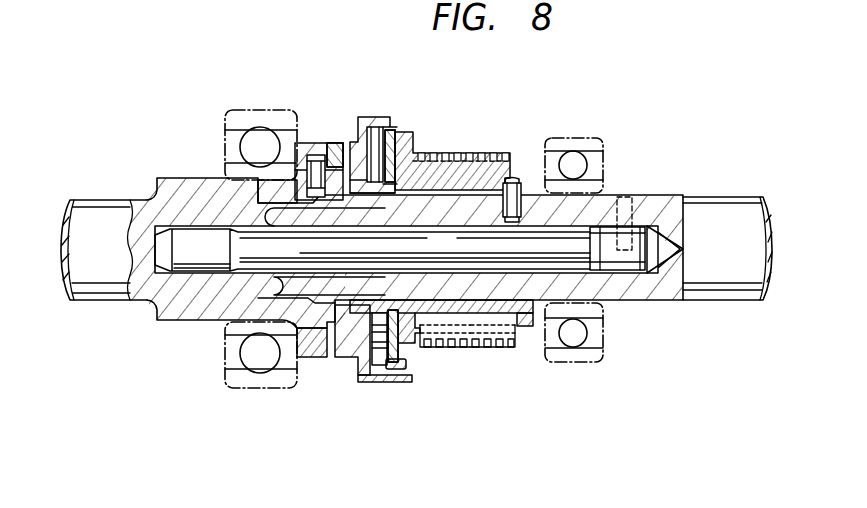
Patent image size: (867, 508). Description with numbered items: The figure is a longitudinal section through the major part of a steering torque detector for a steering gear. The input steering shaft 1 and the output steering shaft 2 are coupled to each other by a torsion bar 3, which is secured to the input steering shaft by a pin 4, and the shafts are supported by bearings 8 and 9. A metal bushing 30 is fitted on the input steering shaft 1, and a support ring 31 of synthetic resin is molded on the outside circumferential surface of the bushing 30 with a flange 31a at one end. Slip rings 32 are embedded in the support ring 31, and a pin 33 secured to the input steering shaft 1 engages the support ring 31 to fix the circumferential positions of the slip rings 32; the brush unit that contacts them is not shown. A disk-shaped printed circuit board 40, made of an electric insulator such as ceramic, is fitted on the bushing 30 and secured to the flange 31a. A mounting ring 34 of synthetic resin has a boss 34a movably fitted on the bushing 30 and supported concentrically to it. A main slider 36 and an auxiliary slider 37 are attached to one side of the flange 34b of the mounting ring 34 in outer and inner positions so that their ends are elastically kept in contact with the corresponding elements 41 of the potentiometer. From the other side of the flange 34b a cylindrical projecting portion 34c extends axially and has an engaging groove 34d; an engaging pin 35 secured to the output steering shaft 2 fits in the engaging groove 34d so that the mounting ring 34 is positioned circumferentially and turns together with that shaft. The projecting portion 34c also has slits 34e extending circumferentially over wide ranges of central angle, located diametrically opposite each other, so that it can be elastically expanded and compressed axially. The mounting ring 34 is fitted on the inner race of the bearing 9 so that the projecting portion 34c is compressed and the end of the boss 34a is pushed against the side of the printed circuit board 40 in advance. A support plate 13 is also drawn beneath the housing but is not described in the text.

The input steering shaft 1 is at (718, 215).
The output steering shaft 2 is at (102, 210).
The torsion bar 3 is at (518, 302).
The pin 4 is at (624, 197).
The bearing 8 is at (603, 340).
The bearing 9 is at (225, 338).
The support plate 13 is at (417, 350).
The bushing 30 is at (537, 255).
The support ring 31 is at (489, 347).
The flange 31a is at (414, 148).
The slip rings 32 is at (455, 348).
The pin 33 is at (512, 180).
The mounting ring 34 is at (403, 57).
The boss 34a is at (375, 128).
The flange 34b is at (357, 140).
The cylindrical projecting portion 34c is at (333, 148).
The engaging groove 34d is at (304, 160).
The slits 34e is at (322, 158).
The engaging pin 35 is at (295, 191).
The main slider 36 is at (383, 370).
The auxiliary slider 37 is at (366, 370).
The printed circuit board 40 is at (395, 126).
The elements of the potentiometer 41 is at (395, 383).